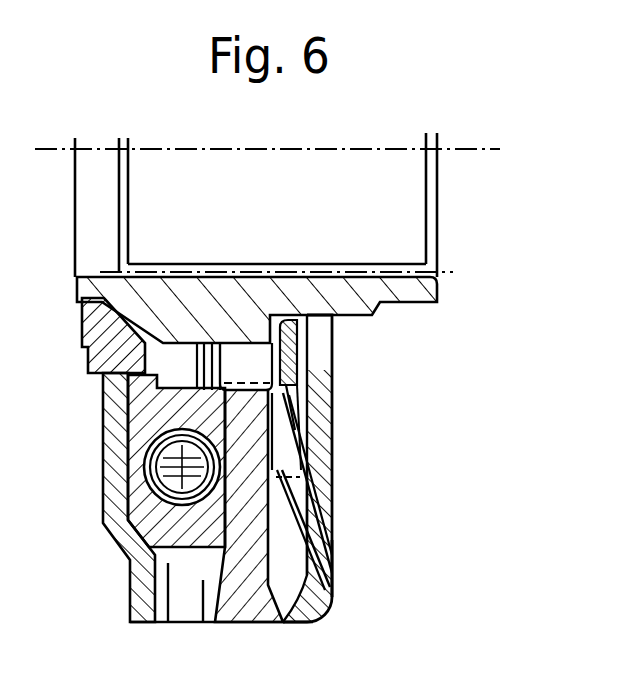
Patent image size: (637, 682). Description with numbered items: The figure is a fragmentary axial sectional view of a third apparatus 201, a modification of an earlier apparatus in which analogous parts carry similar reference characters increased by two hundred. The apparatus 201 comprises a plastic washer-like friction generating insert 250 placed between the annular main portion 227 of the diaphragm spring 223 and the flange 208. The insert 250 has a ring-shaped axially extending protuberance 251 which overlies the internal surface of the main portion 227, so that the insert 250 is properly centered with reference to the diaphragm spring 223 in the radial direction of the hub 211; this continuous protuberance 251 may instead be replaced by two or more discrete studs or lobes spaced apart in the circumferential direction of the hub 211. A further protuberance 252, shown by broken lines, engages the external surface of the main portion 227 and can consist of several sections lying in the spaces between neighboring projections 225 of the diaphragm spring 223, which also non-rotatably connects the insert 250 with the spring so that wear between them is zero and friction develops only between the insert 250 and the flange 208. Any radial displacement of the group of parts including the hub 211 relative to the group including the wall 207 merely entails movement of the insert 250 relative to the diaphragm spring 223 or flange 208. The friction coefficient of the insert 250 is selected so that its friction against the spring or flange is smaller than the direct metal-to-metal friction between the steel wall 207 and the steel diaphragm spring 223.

The third apparatus 201 is at (462, 110).
The hub 211 is at (275, 297).
The wall 207 is at (335, 378).
The ring-shaped axially extending protuberance 251 is at (318, 398).
The friction generating insert 250 is at (310, 425).
The annular main portion 227 is at (300, 443).
The protuberance 252 is at (275, 477).
The diaphragm spring 223 is at (303, 512).
The projections 225 is at (328, 550).
The flange 208 is at (243, 565).